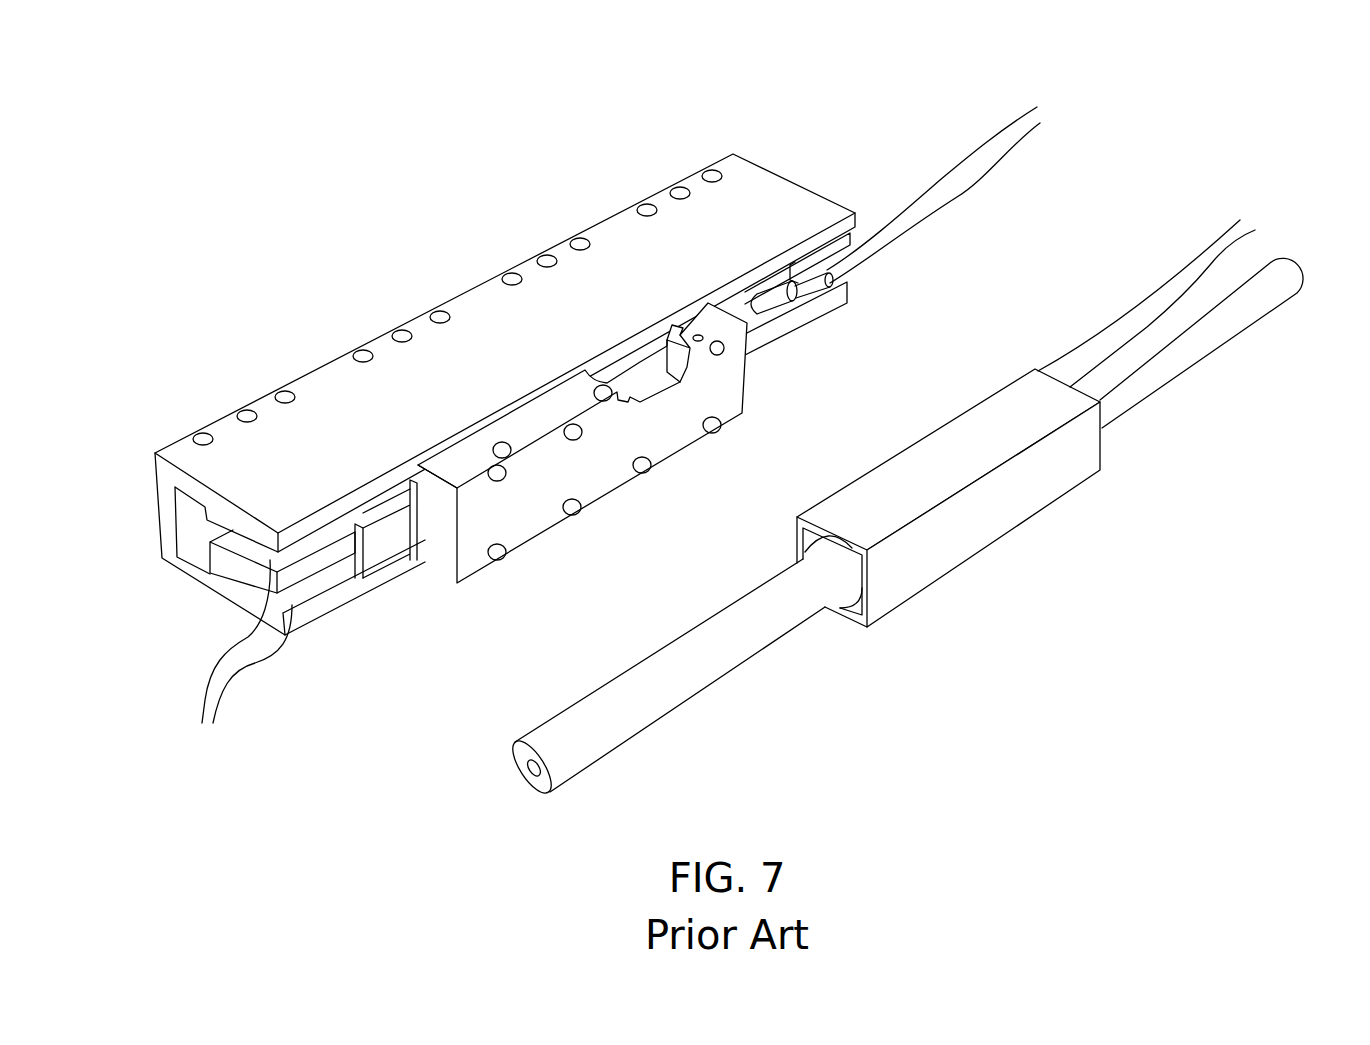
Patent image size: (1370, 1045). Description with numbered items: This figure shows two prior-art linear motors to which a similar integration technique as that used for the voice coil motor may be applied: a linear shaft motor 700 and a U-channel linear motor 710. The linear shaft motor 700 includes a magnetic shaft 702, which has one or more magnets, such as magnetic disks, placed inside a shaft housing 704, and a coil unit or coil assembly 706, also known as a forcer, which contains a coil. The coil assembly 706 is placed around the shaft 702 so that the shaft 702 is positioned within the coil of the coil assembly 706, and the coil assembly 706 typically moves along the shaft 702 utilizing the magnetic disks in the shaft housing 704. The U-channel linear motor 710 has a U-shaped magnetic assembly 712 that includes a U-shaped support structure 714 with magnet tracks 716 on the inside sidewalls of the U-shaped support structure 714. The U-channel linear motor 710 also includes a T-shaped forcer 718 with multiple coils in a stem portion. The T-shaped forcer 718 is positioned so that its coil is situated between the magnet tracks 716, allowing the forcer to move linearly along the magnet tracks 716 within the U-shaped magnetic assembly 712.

The linear shaft motor 700 is at (929, 458).
The magnetic shaft 702 is at (904, 509).
The shaft housing 704 is at (623, 723).
The coil assembly 706 is at (948, 543).
The U-channel linear motor 710 is at (1078, 94).
The U-shaped magnetic assembly 712 is at (640, 398).
The U-shaped support structure 714 is at (485, 305).
The magnet tracks 716 is at (237, 666).
The T-shaped forcer 718 is at (528, 522).